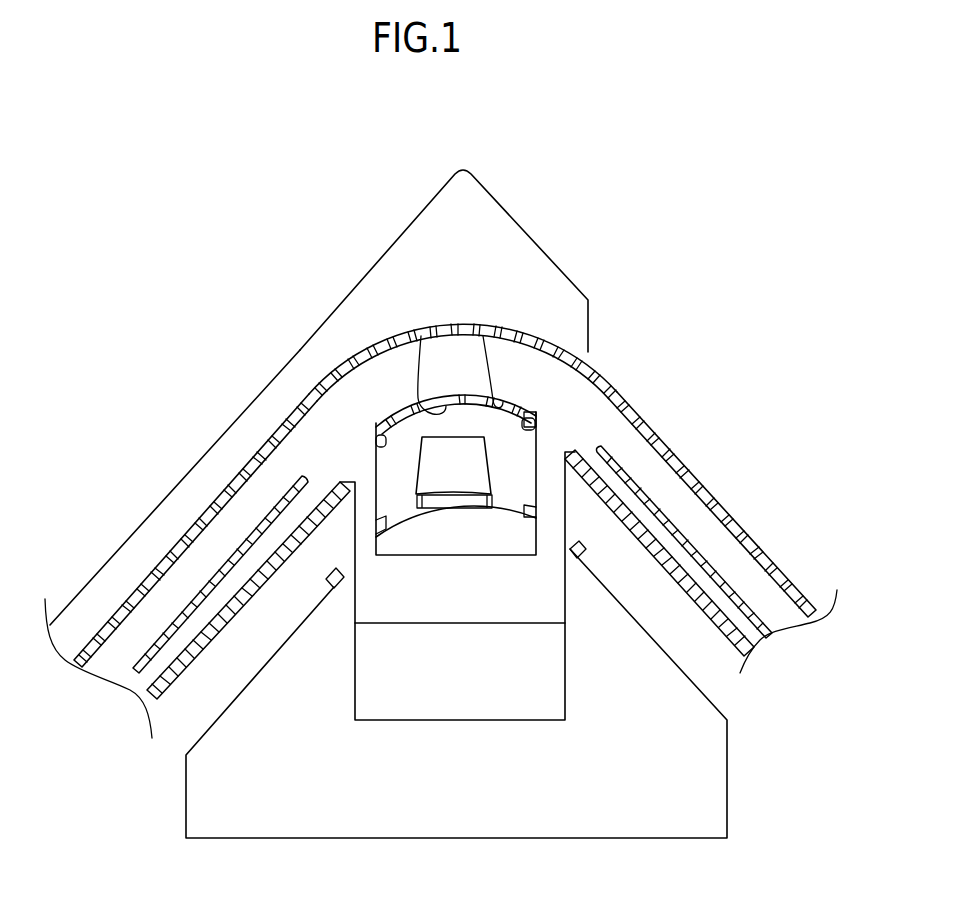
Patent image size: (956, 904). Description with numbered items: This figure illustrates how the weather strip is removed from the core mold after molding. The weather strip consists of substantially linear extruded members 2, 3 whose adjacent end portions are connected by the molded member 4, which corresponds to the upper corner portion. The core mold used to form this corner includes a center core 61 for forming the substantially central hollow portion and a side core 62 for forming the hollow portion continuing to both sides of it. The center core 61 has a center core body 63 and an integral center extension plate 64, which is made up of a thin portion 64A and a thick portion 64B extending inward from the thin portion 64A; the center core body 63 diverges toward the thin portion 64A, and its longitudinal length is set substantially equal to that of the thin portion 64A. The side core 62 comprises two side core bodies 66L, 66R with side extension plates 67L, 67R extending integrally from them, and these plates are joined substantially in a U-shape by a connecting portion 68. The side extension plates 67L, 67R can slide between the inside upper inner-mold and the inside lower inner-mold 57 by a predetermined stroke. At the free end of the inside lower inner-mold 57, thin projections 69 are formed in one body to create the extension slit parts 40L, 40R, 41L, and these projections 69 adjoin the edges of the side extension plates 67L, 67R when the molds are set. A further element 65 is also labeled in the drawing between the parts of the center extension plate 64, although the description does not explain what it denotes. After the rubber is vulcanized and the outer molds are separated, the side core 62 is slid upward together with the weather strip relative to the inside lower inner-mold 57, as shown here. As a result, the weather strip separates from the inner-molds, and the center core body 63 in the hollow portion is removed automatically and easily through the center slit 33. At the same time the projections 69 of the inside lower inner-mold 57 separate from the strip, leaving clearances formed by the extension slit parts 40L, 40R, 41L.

The extruded member 2 is at (131, 537).
The extruded member 3 is at (718, 492).
The molded member 4 is at (553, 257).
The center slit 33 is at (407, 469).
The extension slit part 40L is at (338, 482).
The extension slit part 40R is at (366, 432).
The extension slit part 41L is at (537, 425).
The inside lower inner-mold 57 is at (728, 778).
The center core 61 is at (377, 440).
The side core 62 is at (422, 628).
The center core body 63 is at (335, 442).
The center extension plate 64 is at (708, 350).
The thin portion 64A is at (620, 393).
The thick portion 64B is at (500, 530).
The coil 65 is at (470, 497).
The side core body 66L is at (346, 409).
The side core body 66R is at (564, 374).
The side extension plate 67L is at (355, 520).
The side extension plate 67R is at (566, 498).
The connecting portion 68 is at (472, 624).
The projections 69 is at (356, 468).